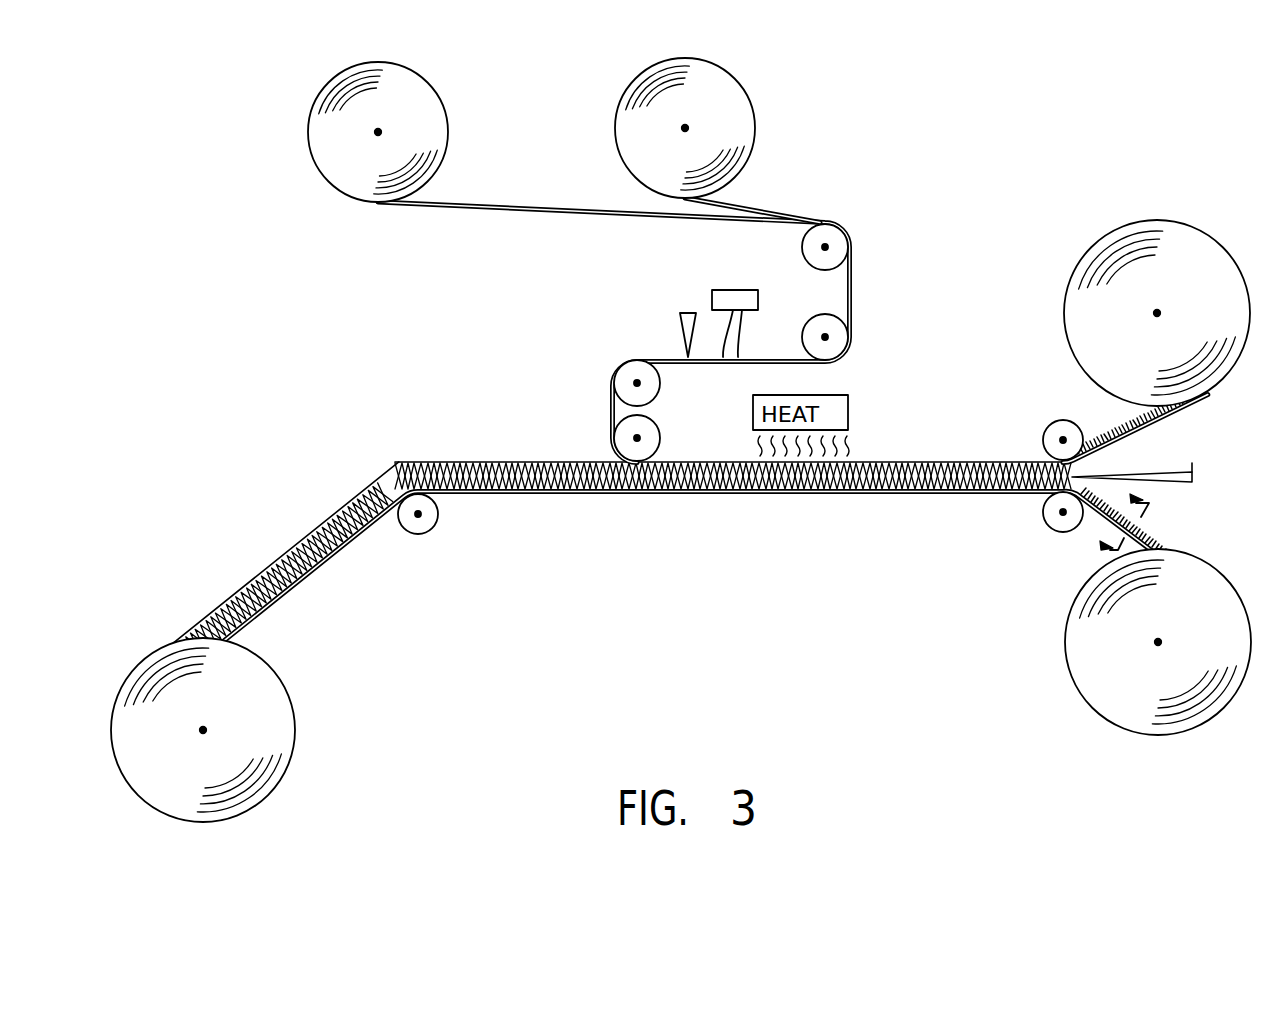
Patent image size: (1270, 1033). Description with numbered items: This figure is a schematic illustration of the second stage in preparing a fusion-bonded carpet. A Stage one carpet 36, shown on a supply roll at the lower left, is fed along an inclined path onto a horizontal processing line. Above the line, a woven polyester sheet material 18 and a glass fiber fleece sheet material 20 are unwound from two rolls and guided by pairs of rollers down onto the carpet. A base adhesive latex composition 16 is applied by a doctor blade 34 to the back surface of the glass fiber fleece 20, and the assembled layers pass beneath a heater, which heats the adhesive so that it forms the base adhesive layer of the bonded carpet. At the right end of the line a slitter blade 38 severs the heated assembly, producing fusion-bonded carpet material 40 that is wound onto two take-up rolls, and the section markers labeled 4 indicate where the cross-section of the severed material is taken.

The base adhesive latex composition 16 is at (741, 336).
The woven polyester sheet material 18 is at (438, 123).
The glass fiber fleece sheet material 20 is at (756, 126).
The doctor blade 34 is at (676, 331).
The Stage 1 carpet 36 is at (256, 787).
The slitter blade 38 is at (1193, 464).
The fusion-bonded carpet material 40 is at (1073, 350).
The section line of FIG. 4 is at (1115, 514).